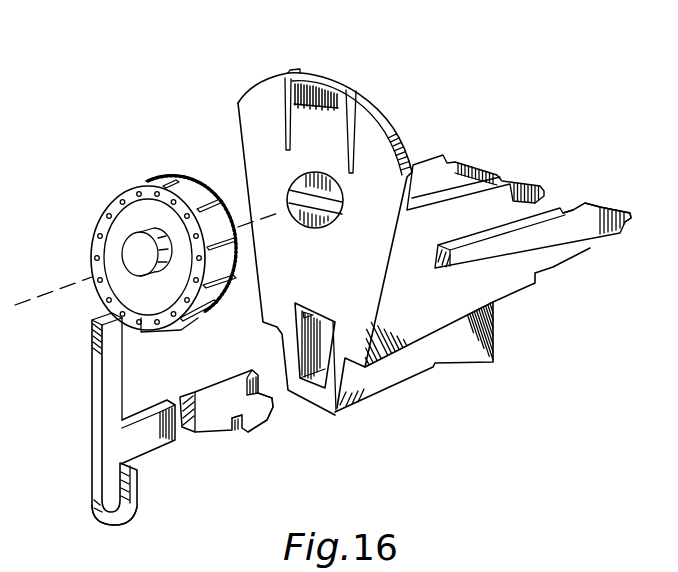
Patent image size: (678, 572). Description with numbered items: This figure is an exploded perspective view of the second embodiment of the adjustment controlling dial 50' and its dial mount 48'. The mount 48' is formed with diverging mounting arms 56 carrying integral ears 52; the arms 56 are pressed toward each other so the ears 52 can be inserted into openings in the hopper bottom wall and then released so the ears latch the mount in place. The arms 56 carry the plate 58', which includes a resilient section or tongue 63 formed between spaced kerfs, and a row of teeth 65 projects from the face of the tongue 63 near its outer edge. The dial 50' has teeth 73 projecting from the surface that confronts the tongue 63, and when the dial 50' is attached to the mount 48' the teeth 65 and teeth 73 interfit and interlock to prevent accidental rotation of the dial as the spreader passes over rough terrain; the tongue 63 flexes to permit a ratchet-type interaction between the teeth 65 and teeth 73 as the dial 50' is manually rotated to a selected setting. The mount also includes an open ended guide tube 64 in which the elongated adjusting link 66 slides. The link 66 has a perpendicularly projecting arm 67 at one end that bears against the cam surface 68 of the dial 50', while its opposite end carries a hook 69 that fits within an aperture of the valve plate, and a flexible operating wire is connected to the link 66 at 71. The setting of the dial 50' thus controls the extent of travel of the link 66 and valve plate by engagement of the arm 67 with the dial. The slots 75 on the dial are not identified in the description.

The dial 50' is at (112, 240).
The cam surface 68 is at (128, 205).
The teeth 73 is at (213, 198).
The slots in dial drum 75 is at (190, 182).
The plate 58' is at (355, 244).
The resilient tongue 63 is at (325, 92).
The teeth 65 is at (338, 102).
The guide tube 64 is at (323, 378).
The dial mount 48' is at (472, 333).
The mounting arms 56 is at (425, 182).
The ears 52 is at (613, 208).
The adjusting link 66 is at (206, 387).
The hook 69 is at (265, 415).
The arm 67 is at (112, 389).
The wire connection point 71 is at (127, 500).